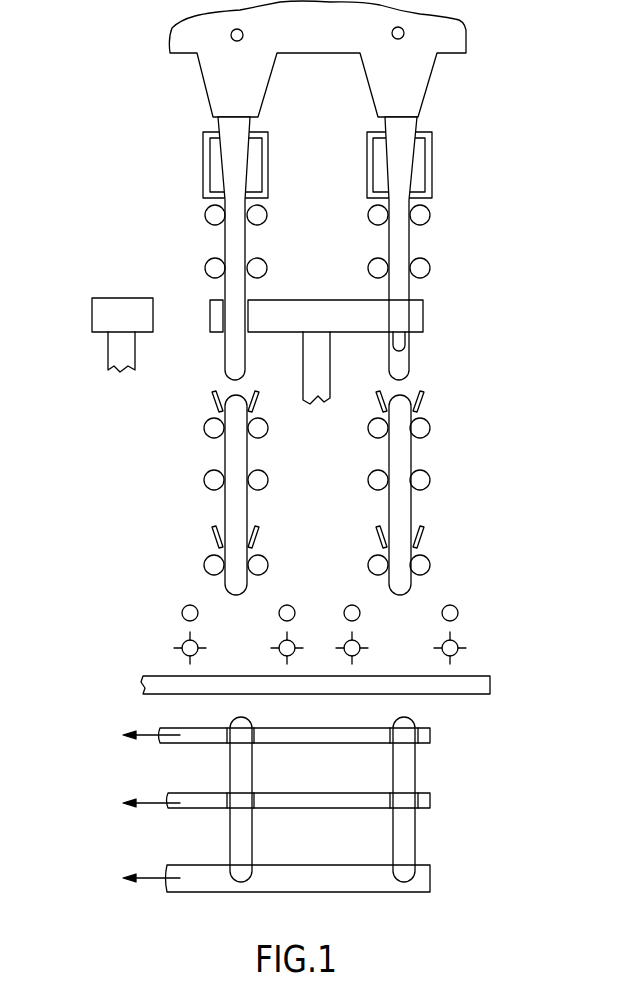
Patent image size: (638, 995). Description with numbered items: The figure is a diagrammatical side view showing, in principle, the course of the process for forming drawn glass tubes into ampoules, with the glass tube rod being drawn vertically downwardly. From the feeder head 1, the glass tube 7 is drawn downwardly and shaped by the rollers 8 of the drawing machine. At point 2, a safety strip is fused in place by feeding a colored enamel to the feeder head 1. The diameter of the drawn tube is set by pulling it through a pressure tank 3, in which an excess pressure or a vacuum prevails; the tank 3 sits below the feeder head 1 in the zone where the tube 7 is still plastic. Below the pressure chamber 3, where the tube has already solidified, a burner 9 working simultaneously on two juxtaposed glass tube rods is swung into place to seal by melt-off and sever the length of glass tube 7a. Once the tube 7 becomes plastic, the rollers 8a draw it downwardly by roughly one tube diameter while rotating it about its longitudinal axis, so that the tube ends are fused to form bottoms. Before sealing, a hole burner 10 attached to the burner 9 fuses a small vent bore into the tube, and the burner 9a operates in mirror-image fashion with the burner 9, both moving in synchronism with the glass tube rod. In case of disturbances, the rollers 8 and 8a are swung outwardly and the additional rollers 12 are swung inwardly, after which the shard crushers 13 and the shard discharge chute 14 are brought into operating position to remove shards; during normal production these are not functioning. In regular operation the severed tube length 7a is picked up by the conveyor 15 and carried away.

The feeder head 1 is at (408, 88).
The point 2 is at (404, 33).
The pressure tank 3 is at (428, 145).
The glass tube 7 is at (400, 190).
The rollers 8 is at (425, 217).
The burner 9 is at (413, 313).
The burner 9a is at (100, 316).
The hole burner 10 is at (398, 345).
The length of glass tube 7a is at (402, 515).
The rollers 8a is at (422, 428).
The additional rollers 12 is at (360, 613).
The shard crushers 13 is at (458, 650).
The shard discharge chute 14 is at (490, 686).
The conveyor 15 is at (430, 735).